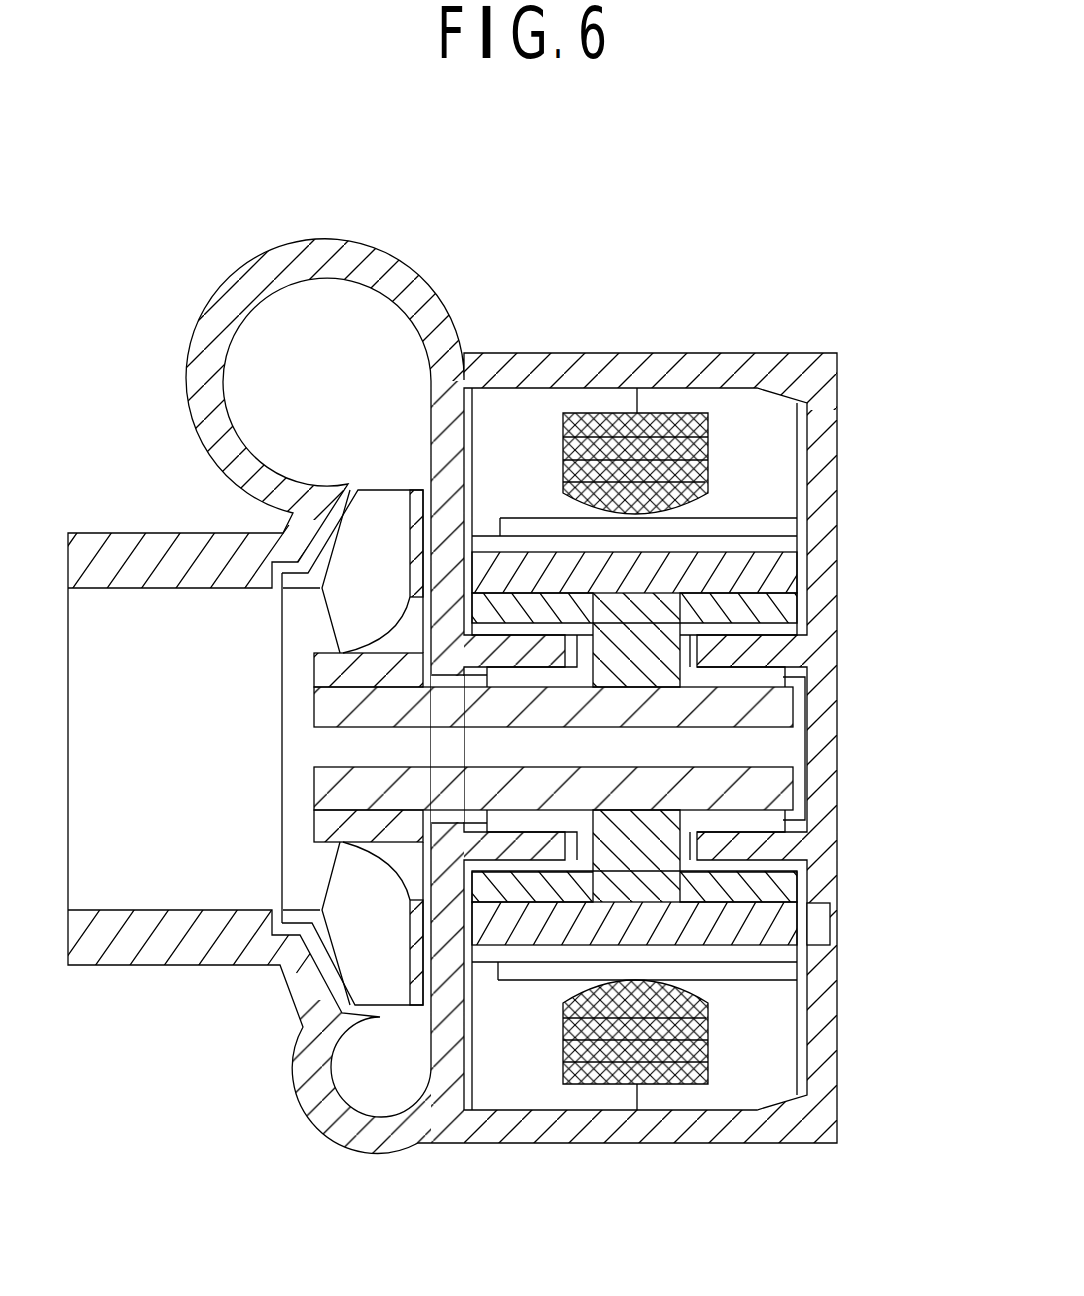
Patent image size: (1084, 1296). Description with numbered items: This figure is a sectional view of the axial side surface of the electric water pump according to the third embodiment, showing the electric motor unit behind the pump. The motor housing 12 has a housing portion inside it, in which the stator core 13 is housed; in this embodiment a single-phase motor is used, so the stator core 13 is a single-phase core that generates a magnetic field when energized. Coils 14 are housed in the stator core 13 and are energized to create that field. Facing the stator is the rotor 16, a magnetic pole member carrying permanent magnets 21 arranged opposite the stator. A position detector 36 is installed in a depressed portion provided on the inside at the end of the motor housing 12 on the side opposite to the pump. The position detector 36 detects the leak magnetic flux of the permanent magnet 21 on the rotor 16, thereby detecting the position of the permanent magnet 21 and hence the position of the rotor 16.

The motor housing 12 is at (662, 350).
The stator core 13 is at (516, 444).
The coil 14 is at (707, 440).
The rotor 16 is at (713, 885).
The permanent magnet 21 is at (548, 925).
The position detector 36 is at (820, 922).